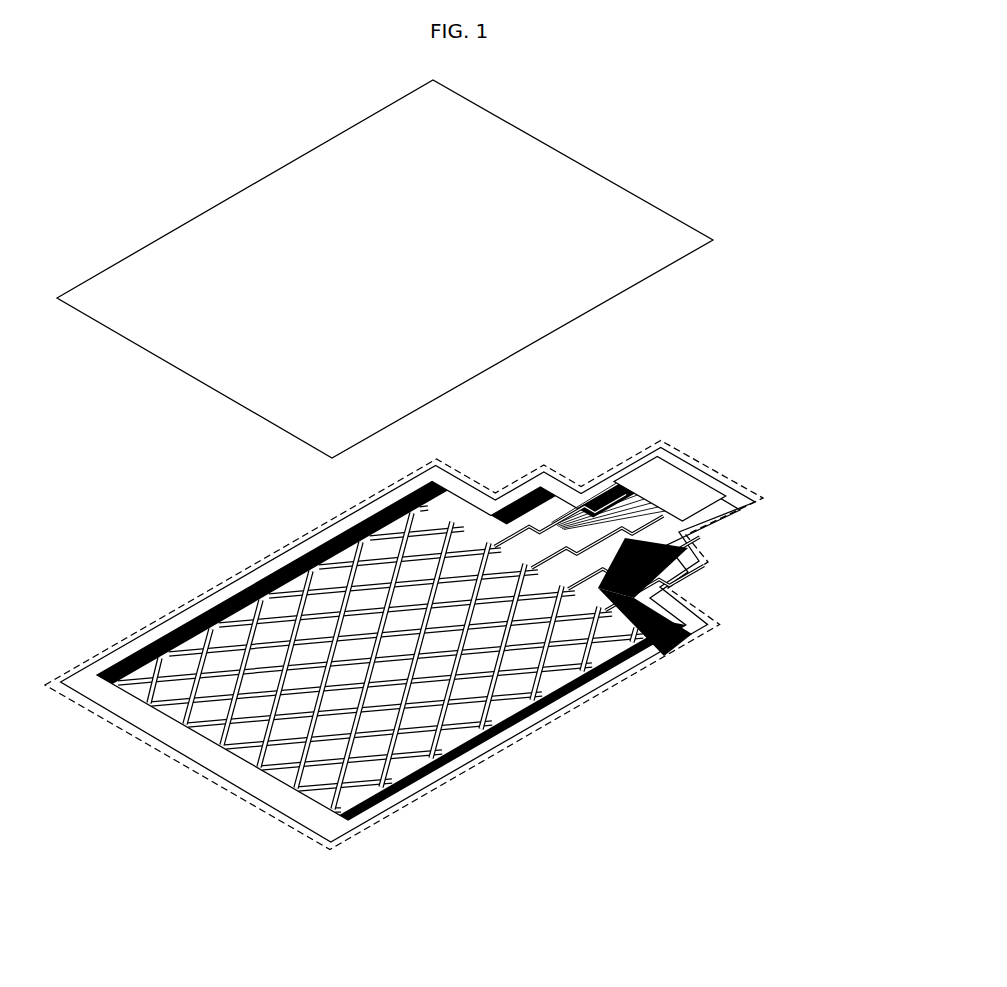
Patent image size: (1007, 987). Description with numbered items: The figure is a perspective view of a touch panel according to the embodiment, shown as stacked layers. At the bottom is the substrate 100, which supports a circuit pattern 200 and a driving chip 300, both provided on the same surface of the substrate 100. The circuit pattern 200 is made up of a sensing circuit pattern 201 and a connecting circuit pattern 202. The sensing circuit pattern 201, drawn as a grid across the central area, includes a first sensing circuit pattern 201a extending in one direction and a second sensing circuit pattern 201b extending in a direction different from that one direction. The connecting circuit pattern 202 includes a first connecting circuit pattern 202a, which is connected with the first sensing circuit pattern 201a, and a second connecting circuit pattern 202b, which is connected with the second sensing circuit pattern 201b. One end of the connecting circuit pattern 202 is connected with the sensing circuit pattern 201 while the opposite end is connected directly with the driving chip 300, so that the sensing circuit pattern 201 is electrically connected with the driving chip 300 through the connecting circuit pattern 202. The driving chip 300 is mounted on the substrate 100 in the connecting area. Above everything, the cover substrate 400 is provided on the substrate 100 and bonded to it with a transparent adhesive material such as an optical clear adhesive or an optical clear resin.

The substrate 100 is at (82, 675).
The circuit pattern 200 is at (836, 548).
The sensing circuit pattern 201 is at (480, 659).
The first sensing circuit pattern 201a is at (486, 688).
The second sensing circuit pattern 201b is at (462, 720).
The connecting circuit pattern 202 is at (786, 523).
The first connecting circuit pattern 202a is at (668, 578).
The second connecting circuit pattern 202b is at (668, 540).
The driving chip 300 is at (676, 482).
The cover substrate 400 is at (246, 190).